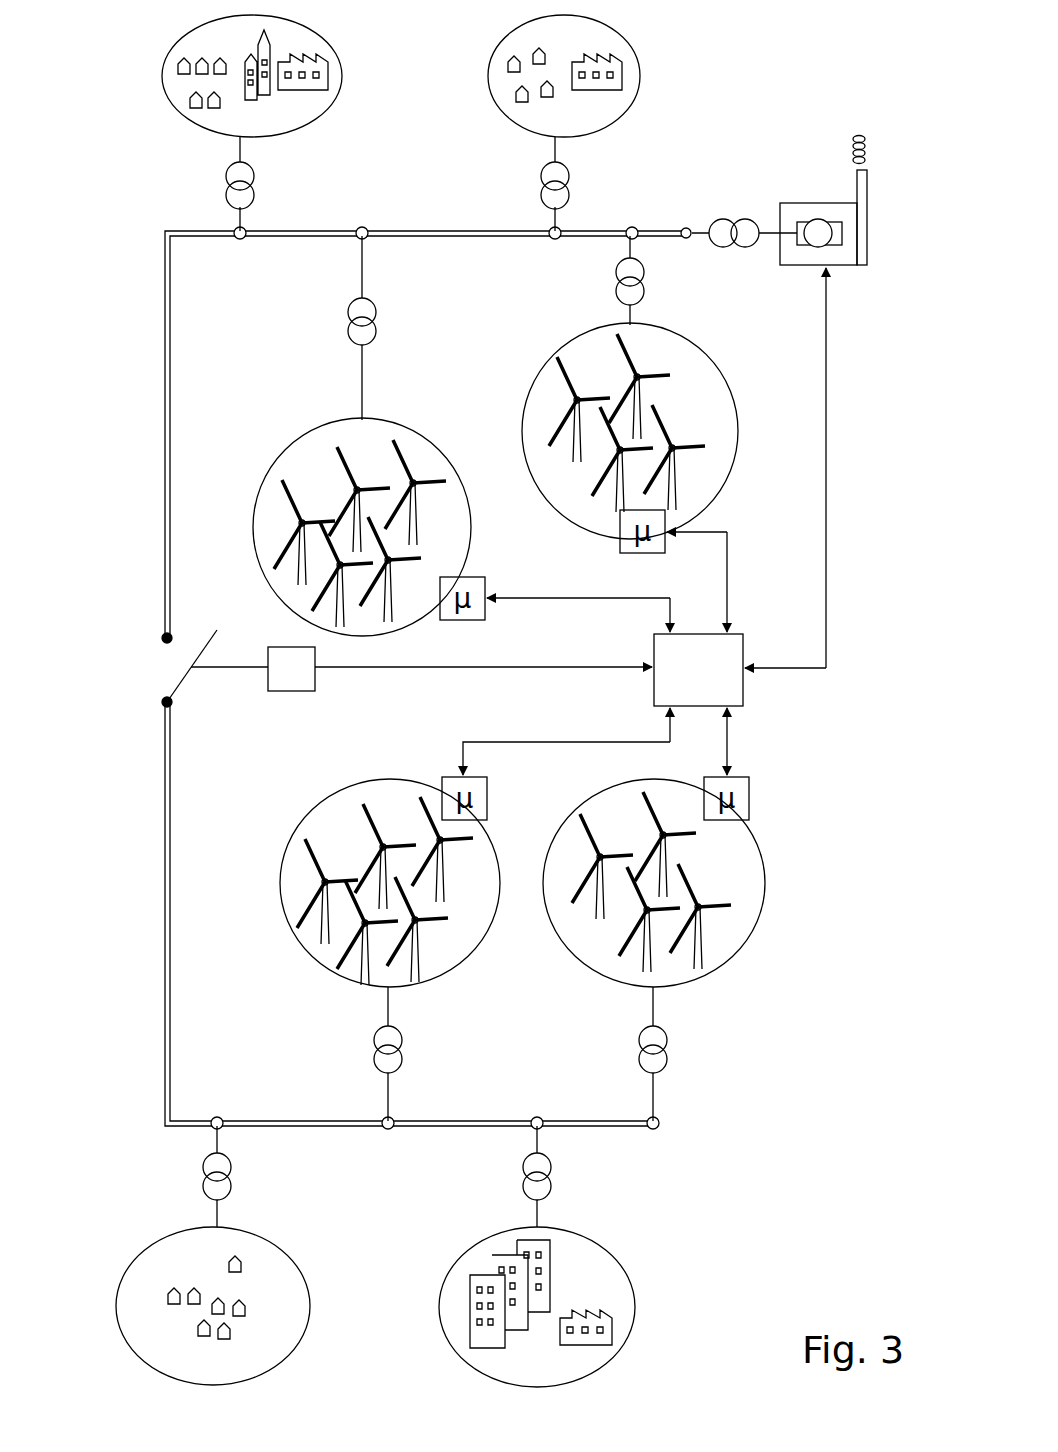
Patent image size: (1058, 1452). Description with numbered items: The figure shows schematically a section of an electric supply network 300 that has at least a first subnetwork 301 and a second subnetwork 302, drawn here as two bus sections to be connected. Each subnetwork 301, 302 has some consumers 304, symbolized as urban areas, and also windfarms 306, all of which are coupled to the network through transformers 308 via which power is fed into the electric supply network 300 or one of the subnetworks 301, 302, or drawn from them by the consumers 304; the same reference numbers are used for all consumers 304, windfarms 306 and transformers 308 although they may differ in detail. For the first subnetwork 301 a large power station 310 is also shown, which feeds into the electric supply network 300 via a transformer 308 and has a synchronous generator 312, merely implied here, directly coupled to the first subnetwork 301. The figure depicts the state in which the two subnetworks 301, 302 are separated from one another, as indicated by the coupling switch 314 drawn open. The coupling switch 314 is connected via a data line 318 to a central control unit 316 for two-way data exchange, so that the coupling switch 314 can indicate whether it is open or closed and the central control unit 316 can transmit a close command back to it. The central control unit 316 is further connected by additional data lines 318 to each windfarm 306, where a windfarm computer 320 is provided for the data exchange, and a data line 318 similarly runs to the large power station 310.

The electric supply network 300 is at (858, 977).
The first subnetwork 301 is at (155, 372).
The second subnetwork 302 is at (152, 925).
The consumers 304 is at (342, 78).
The windfarms 306 is at (412, 433).
The transformers 308 is at (254, 178).
The large power station 310 is at (837, 232).
The synchronous generator 312 is at (822, 238).
The coupling switch 314 is at (230, 640).
The central control unit 316 is at (745, 692).
The data line 318 is at (729, 540).
The windfarm computer 320 is at (620, 550).